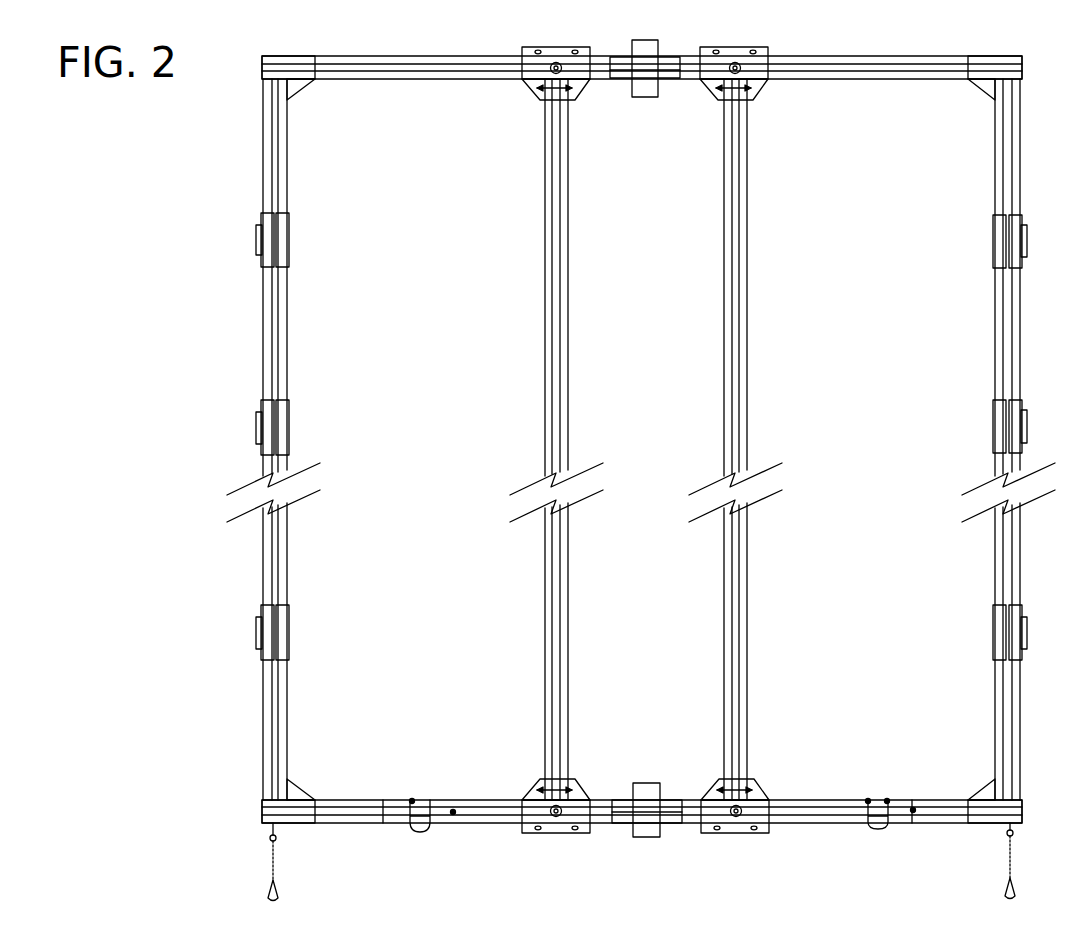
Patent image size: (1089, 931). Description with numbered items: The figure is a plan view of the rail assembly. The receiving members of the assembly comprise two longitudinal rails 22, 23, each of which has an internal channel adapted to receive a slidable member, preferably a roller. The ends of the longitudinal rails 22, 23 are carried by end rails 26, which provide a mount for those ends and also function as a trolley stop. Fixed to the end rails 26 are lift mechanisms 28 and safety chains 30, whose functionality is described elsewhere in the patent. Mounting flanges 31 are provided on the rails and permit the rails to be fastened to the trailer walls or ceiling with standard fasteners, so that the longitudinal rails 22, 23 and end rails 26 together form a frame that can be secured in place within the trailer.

The longitudinal rail 22 is at (557, 357).
The longitudinal rail 23 is at (1007, 305).
The end rail 26 is at (471, 68).
The lift mechanism 28 is at (415, 832).
The safety chain 30 is at (1015, 860).
The mounting flange 31 is at (1017, 407).